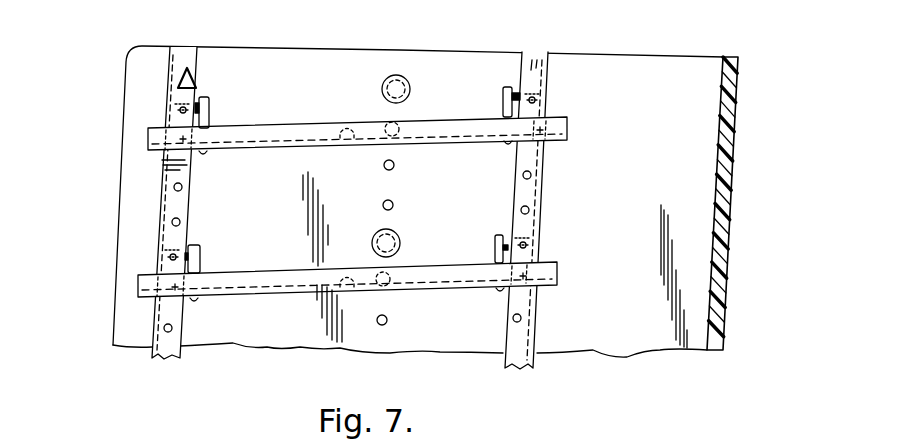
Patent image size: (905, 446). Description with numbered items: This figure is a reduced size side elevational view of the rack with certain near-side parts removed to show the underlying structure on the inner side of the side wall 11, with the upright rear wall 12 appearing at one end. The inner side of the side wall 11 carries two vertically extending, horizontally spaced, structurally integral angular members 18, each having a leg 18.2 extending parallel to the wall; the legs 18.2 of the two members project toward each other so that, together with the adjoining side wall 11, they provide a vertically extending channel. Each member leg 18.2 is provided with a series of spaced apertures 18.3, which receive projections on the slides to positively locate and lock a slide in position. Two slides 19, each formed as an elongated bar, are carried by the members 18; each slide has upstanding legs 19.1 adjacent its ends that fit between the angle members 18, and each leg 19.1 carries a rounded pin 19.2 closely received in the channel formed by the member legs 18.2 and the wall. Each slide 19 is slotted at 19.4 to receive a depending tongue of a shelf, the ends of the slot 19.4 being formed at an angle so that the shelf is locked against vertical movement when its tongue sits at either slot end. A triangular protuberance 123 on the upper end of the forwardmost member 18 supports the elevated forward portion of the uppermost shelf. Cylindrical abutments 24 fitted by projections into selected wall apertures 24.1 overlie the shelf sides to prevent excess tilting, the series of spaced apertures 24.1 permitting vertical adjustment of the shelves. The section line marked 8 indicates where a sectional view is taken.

The section line 8- 8 is at (223, 230).
The side wall 11 is at (292, 60).
The rear wall 12 is at (730, 150).
The angular member 18 is at (150, 182).
The member leg 18.2 is at (181, 193).
The aperture 18.3 is at (180, 222).
The slide 19 is at (342, 98).
The upstanding leg 19.1 is at (210, 110).
The rounded pin 19.2 is at (177, 100).
The slide slot 19.4 is at (352, 151).
The abutment 24 is at (402, 76).
The aperture 24.1 is at (395, 169).
The triangular protuberance 123 is at (188, 67).